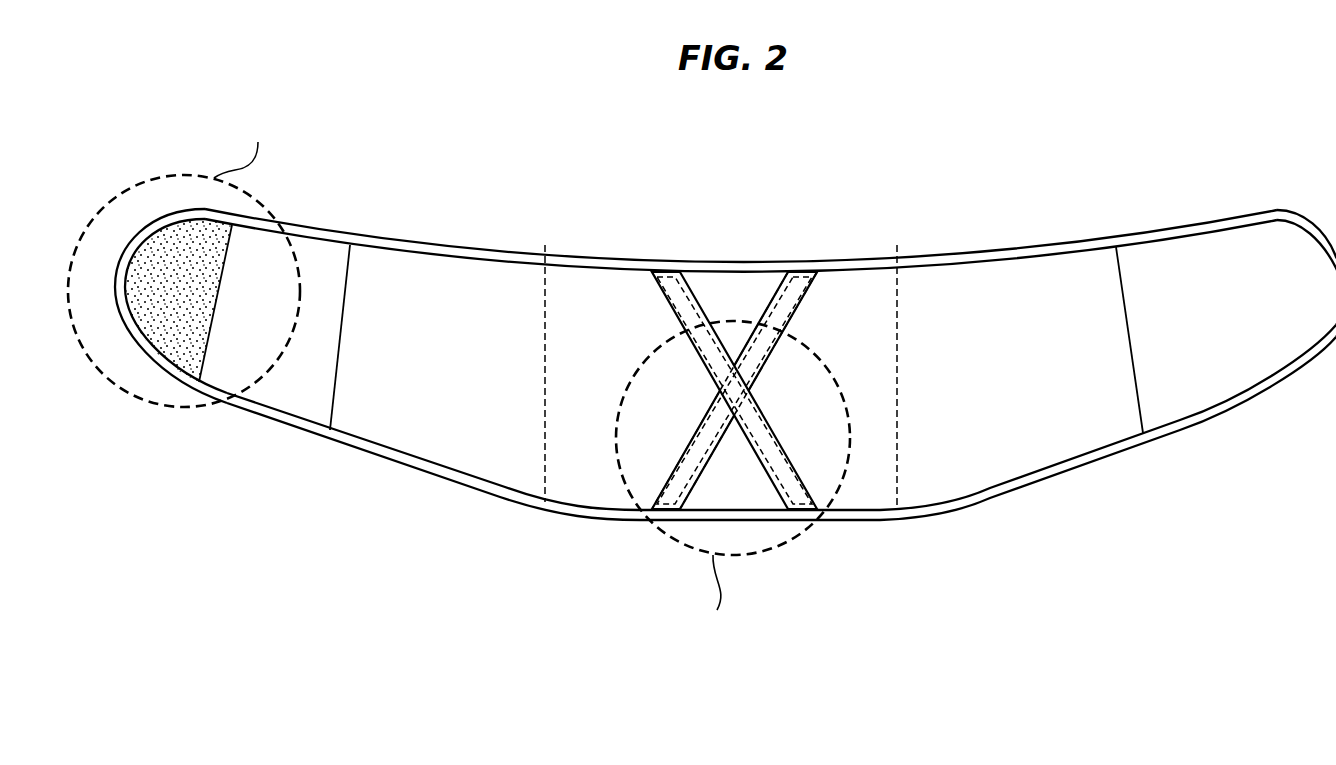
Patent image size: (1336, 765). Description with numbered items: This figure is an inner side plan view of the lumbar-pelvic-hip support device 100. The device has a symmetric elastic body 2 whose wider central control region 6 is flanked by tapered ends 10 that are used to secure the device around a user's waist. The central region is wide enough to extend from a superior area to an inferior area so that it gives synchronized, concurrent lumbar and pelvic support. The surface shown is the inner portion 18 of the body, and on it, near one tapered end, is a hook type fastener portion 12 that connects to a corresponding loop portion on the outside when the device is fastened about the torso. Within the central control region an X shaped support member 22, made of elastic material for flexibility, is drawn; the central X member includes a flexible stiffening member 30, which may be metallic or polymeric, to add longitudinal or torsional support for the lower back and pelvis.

The lumbar-pelvic-hip support device 100 is at (941, 170).
The symmetric elastic body 2 is at (1026, 459).
The central control region 6 is at (897, 245).
The tapered ends 10 is at (230, 410).
The hook type fastener portion 12 is at (167, 260).
The inner portion 18 is at (923, 444).
The X shaped support member 22 is at (795, 492).
The flexible stiffening member 30 is at (694, 296).